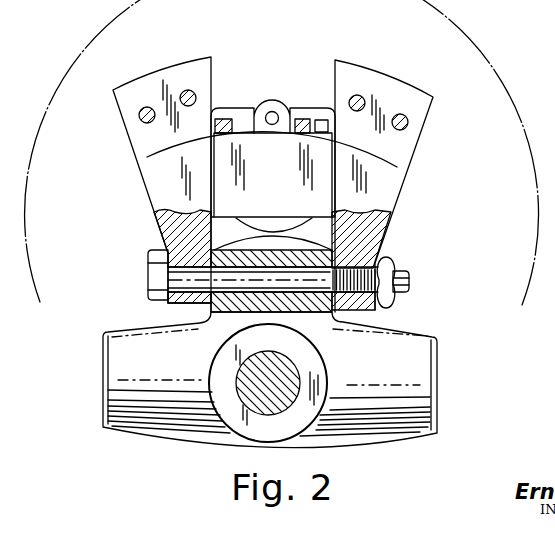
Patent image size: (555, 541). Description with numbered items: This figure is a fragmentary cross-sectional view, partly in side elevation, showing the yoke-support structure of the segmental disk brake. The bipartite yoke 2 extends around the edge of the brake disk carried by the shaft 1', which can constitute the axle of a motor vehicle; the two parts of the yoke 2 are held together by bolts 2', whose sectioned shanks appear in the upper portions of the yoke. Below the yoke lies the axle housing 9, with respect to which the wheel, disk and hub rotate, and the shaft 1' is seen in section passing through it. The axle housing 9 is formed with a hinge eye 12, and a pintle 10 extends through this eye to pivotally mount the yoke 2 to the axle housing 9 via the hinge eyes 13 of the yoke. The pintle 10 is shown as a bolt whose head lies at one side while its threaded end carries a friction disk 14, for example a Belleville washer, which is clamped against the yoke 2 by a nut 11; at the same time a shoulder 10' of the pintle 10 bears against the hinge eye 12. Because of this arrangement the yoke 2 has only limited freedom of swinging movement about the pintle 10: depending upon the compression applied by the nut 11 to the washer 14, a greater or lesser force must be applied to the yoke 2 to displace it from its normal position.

The yoke 2 is at (273, 171).
The bolts 2' is at (273, 75).
The hinge eye 12 is at (278, 252).
The pintle 10 is at (242, 260).
The shoulder 10' is at (184, 339).
The hinge eyes 13 is at (170, 299).
The friction disk 14 is at (382, 263).
The nut 11 is at (402, 283).
The axle housing 9 is at (102, 404).
The shaft 1' is at (290, 383).